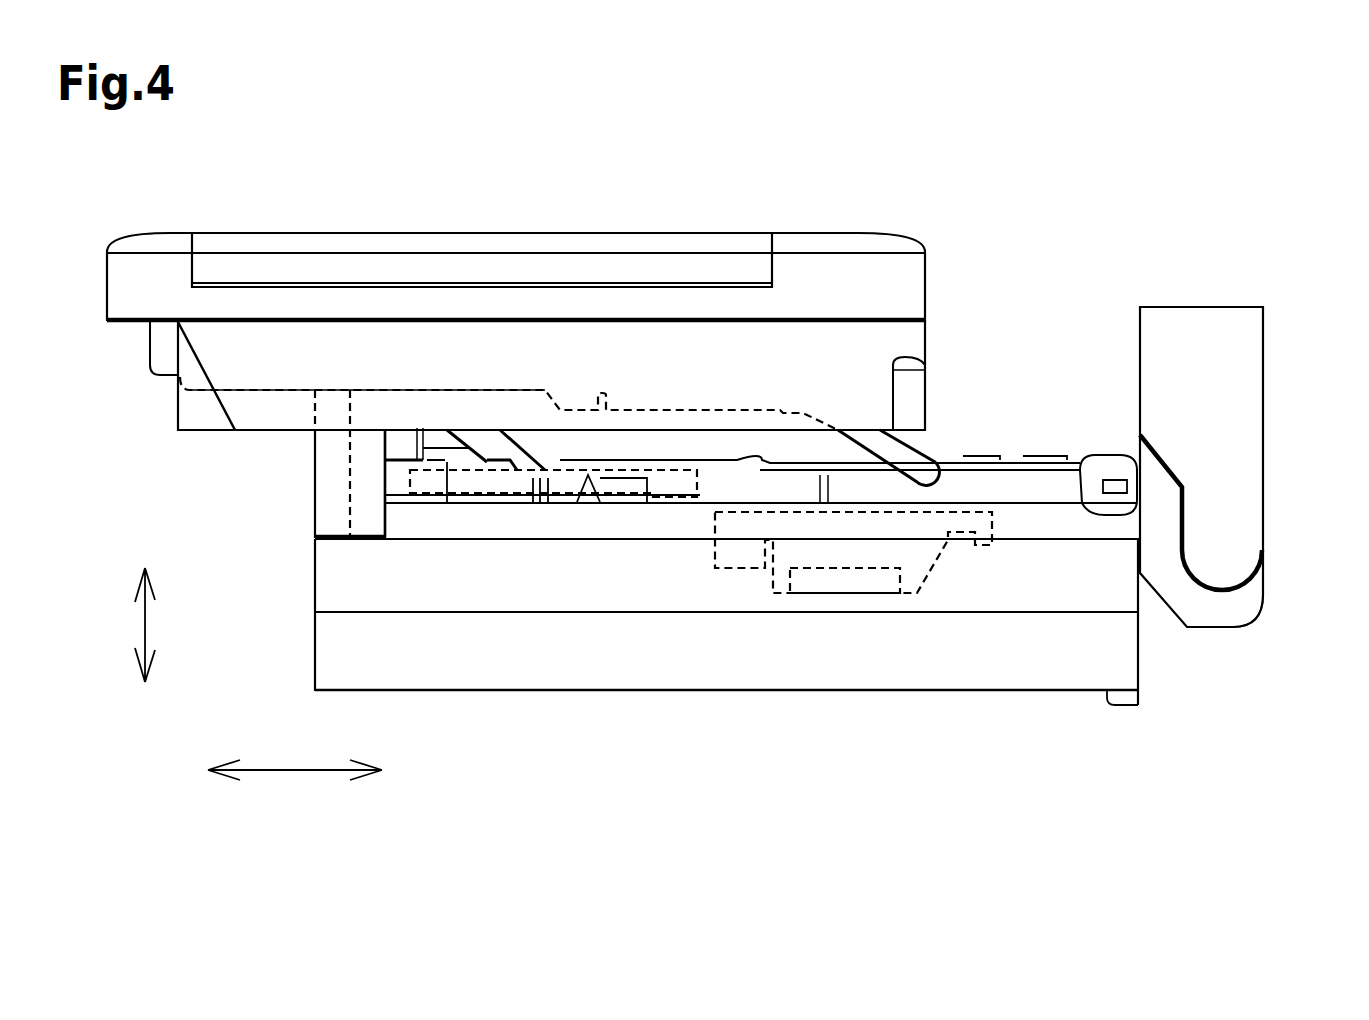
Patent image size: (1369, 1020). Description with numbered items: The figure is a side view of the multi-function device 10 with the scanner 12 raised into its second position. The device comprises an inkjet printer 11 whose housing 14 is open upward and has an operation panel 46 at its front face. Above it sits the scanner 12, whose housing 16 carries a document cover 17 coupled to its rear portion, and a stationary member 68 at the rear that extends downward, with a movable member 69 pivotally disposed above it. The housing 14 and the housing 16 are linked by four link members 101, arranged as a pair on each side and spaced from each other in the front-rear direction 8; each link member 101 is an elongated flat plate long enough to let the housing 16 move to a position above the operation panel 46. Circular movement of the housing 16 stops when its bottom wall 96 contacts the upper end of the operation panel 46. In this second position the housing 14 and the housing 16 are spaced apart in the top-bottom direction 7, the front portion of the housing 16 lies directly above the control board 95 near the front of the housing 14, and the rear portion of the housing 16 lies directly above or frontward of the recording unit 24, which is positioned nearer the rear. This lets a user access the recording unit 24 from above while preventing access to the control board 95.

The top-bottom direction 7 is at (145, 625).
The front-rear direction 8 is at (292, 770).
The multi-function device 10 is at (1068, 233).
The inkjet printer 11 is at (284, 607).
The scanner 12 is at (163, 443).
The housing 14 is at (315, 645).
The housing 16 is at (857, 353).
The document cover 17 is at (185, 232).
The recording unit 24 is at (843, 595).
The operation panel 46 is at (330, 488).
The stationary member 68 is at (1195, 630).
The movable member 69 is at (1265, 412).
The control board 95 is at (677, 452).
The bottom wall 96 is at (413, 390).
The link member 101 is at (490, 446).